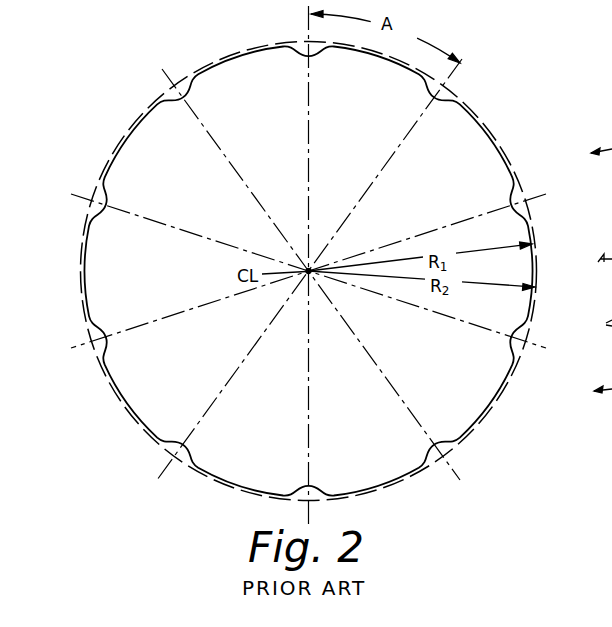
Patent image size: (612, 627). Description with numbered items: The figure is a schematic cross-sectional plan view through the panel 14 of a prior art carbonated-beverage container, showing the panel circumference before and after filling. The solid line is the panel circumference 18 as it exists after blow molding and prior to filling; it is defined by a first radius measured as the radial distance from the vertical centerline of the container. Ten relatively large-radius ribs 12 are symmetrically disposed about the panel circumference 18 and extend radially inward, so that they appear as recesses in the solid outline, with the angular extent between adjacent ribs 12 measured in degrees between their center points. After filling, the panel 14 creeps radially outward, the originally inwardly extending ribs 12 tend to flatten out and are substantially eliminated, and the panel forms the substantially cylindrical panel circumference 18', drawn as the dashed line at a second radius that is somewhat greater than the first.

The rib 12 is at (424, 78).
The panel 14 is at (308, 270).
The panel circumference 18 is at (308, 270).
The cylindrical panel circumference 18' is at (309, 271).